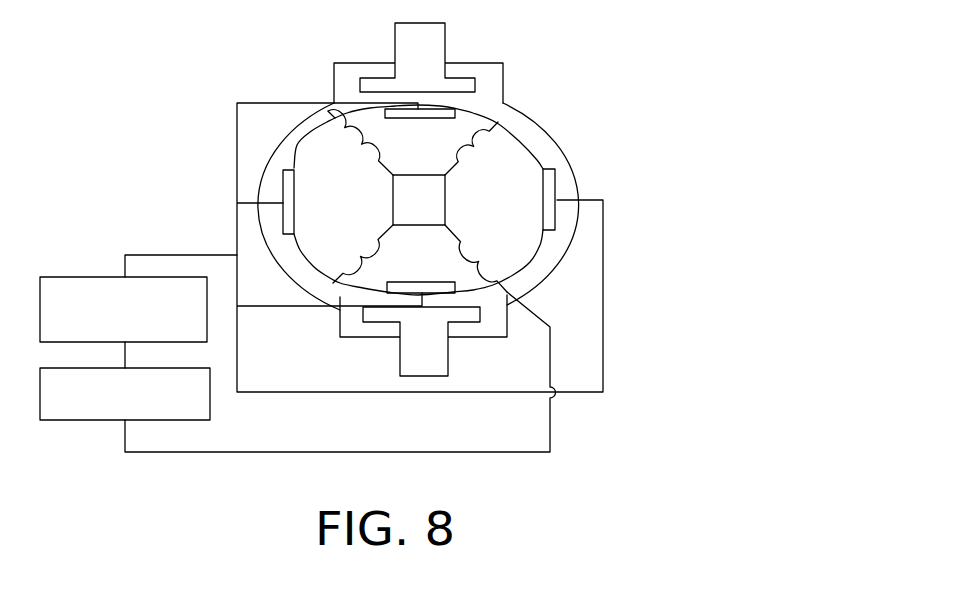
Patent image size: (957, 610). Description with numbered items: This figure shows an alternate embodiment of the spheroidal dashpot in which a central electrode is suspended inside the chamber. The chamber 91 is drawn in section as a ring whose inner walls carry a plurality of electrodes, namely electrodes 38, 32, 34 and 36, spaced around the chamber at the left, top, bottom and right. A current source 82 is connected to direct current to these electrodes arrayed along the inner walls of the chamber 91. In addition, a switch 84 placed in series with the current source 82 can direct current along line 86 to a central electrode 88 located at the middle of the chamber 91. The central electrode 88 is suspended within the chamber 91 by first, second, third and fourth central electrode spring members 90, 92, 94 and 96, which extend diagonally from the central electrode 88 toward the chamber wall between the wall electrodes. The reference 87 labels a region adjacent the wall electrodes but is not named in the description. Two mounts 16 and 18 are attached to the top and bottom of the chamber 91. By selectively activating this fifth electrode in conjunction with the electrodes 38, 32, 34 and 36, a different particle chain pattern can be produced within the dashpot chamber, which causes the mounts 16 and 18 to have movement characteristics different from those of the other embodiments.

The mount 16 is at (427, 32).
The mount 18 is at (428, 340).
The electrode 32 is at (447, 112).
The electrode 34 is at (387, 283).
The electrode 36 is at (552, 183).
The electrode 38 is at (283, 186).
The current source 82 is at (57, 293).
The switch 84 is at (53, 382).
The line 86 is at (533, 310).
The rotor 87 is at (337, 160).
The central electrode 88 is at (428, 198).
The first central electrode spring member 90 is at (497, 128).
The chamber 91 is at (542, 133).
The second central electrode spring member 92 is at (377, 166).
The third central electrode spring member 94 is at (386, 229).
The fourth central electrode spring member 96 is at (499, 270).